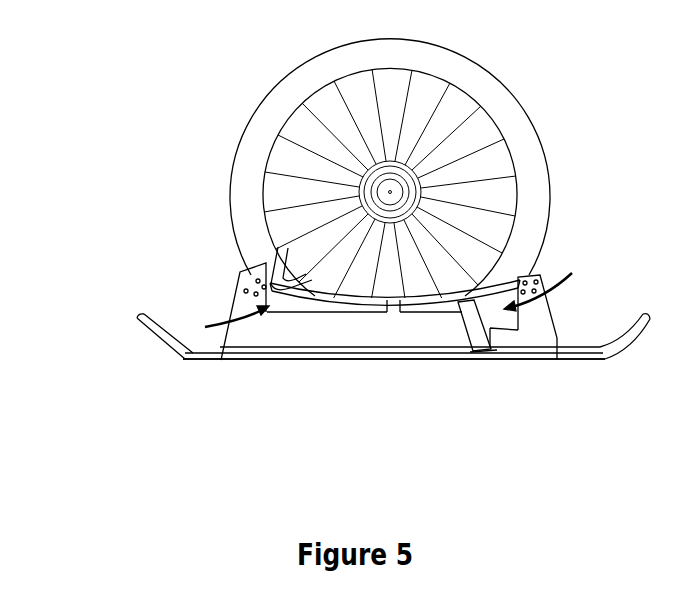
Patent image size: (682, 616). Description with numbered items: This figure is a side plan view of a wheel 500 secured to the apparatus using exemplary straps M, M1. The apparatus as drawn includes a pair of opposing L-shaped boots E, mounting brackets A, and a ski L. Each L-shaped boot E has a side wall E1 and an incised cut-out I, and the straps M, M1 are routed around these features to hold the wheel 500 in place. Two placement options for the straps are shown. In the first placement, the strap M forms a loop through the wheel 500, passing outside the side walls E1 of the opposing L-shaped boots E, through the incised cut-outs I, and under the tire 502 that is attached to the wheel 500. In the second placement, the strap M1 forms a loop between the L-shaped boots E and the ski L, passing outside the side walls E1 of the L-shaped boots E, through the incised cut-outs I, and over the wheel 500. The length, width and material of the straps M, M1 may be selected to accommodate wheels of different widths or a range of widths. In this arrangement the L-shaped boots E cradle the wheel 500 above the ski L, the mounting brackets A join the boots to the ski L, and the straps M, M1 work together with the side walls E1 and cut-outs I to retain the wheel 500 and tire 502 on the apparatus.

The wheel 500 is at (256, 80).
The tire 502 is at (252, 162).
The strap M is at (281, 247).
The L-shaped boot E is at (227, 312).
The side wall E1 is at (547, 337).
The strap M1 is at (518, 332).
The incised cut-out I is at (392, 295).
The mounting bracket A is at (304, 346).
The ski L is at (345, 360).